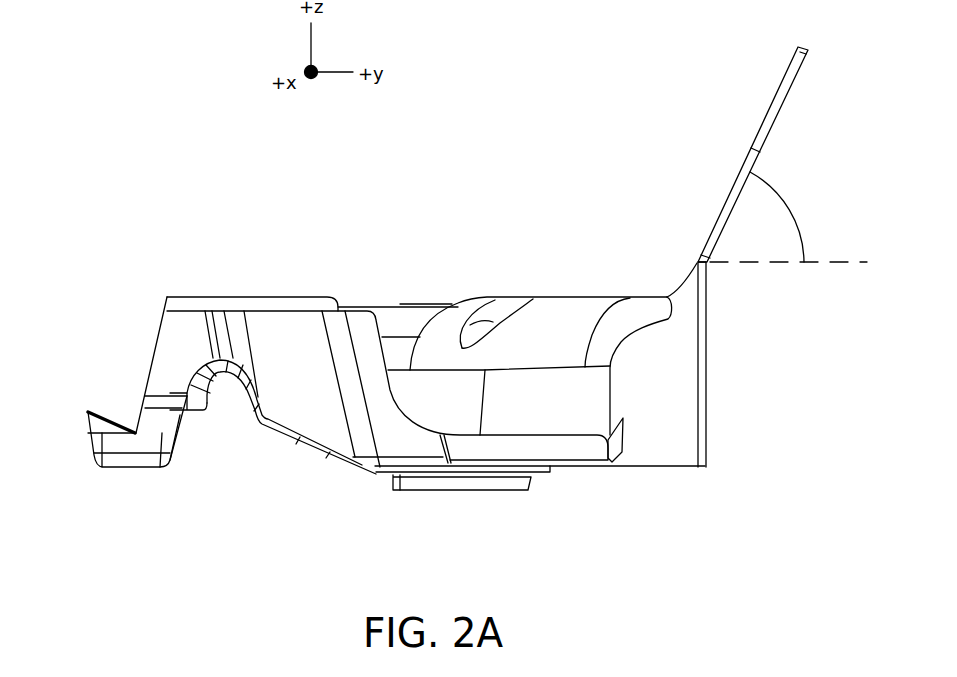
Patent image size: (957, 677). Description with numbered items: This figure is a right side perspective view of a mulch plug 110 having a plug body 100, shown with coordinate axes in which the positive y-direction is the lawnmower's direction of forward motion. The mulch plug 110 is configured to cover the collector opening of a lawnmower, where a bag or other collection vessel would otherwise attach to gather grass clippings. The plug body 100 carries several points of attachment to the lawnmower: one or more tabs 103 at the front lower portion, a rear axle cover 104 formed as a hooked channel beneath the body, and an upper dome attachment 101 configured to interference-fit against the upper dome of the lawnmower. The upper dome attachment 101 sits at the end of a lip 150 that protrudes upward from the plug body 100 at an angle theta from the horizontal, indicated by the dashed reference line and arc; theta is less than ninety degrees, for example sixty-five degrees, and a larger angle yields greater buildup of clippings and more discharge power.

The plug body 100 is at (810, 503).
The upper dome attachment 101 is at (797, 48).
The tabs 103 is at (113, 417).
The rear axle cover 104 is at (223, 383).
The mulch plug 110 is at (421, 376).
The lip 150 is at (777, 122).